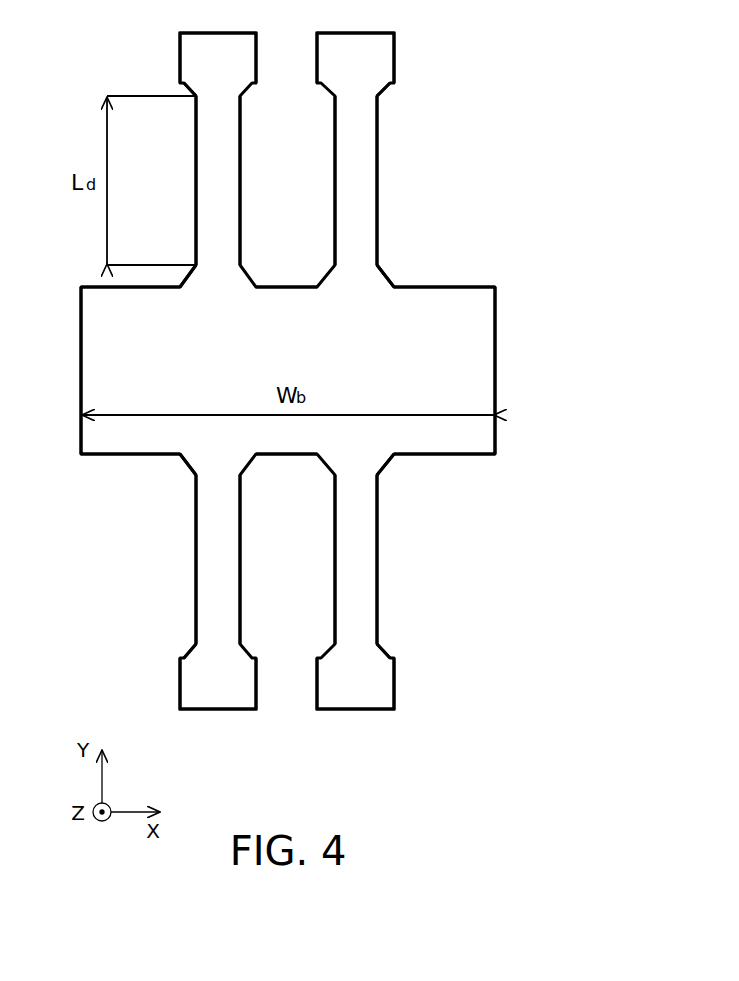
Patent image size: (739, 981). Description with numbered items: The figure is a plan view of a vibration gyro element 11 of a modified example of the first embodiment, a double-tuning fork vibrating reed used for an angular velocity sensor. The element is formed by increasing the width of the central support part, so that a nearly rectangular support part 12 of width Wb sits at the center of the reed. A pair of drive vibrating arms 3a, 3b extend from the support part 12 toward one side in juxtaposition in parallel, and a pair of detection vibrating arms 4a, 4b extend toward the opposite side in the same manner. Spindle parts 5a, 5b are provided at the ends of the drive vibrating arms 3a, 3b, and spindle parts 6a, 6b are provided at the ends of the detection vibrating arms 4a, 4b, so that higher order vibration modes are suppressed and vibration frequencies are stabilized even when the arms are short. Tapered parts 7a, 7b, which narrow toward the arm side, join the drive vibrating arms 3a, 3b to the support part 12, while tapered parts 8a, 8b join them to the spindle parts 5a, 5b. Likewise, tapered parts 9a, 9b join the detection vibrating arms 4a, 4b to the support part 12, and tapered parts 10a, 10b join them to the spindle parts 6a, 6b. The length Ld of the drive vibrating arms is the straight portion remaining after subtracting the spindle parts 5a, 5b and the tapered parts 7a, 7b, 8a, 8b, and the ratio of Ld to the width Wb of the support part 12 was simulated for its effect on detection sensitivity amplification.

The vibration gyro element 11 is at (477, 222).
The support part 12 is at (495, 353).
The drive vibrating arm 3a is at (195, 203).
The drive vibrating arm 3b is at (378, 207).
The detection vibrating arm 4a is at (195, 587).
The detection vibrating arm 4b is at (378, 587).
The spindle part 5a is at (180, 67).
The spindle part 5b is at (394, 67).
The spindle part 6a is at (217, 709).
The spindle part 6b is at (352, 709).
The tapered part 7a is at (188, 277).
The tapered part 7b is at (387, 277).
The tapered part 8a is at (190, 92).
The tapered part 8b is at (385, 92).
The tapered part 9a is at (190, 468).
The tapered part 9b is at (385, 467).
The tapered part 10a is at (190, 652).
The tapered part 10b is at (383, 652).